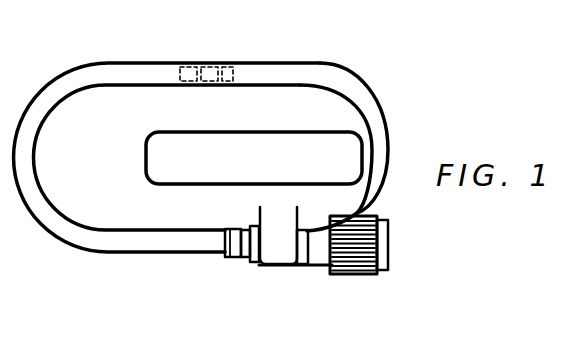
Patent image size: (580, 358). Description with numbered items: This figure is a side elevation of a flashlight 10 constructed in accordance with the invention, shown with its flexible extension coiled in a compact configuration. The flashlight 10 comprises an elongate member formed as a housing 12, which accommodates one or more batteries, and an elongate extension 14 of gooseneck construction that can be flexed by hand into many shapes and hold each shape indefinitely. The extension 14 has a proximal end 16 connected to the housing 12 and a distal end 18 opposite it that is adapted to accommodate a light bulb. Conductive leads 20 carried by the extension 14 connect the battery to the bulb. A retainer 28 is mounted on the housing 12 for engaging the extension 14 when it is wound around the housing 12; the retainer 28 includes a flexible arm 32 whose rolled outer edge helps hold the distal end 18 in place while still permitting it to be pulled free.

The flashlight 10 is at (367, 82).
The housing 12 is at (127, 97).
The extension 14 is at (277, 62).
The proximal end 16 is at (380, 198).
The distal end 18 is at (352, 275).
The conductive leads 20 is at (190, 62).
The retainer 28 is at (280, 257).
The arm 32 is at (248, 260).